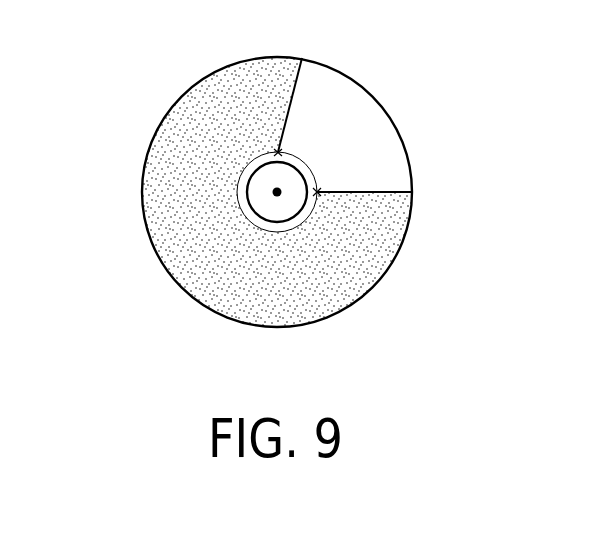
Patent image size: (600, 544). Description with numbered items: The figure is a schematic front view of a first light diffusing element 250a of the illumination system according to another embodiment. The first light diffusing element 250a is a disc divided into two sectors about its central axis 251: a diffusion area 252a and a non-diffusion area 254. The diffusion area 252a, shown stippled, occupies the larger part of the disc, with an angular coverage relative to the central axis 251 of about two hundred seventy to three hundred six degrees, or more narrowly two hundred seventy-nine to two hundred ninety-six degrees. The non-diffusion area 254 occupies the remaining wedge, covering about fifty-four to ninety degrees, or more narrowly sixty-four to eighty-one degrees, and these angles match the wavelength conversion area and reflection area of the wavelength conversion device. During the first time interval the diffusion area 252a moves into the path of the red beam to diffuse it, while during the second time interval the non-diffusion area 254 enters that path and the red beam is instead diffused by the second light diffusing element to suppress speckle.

The first light diffusing element 250a is at (478, 355).
The diffusion area 252a is at (218, 107).
The non-diffusion area 254 is at (335, 107).
The central axis 251 is at (277, 192).